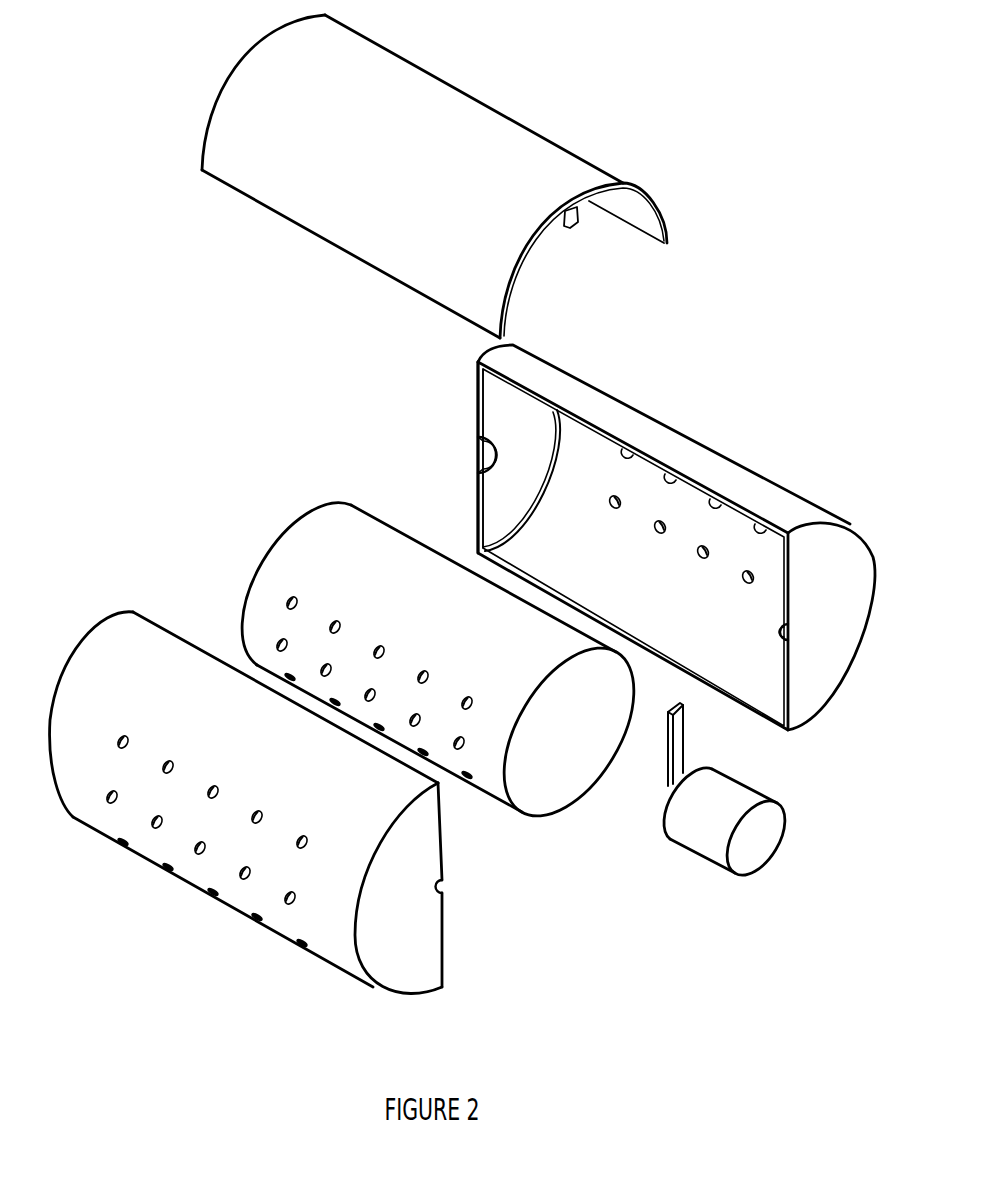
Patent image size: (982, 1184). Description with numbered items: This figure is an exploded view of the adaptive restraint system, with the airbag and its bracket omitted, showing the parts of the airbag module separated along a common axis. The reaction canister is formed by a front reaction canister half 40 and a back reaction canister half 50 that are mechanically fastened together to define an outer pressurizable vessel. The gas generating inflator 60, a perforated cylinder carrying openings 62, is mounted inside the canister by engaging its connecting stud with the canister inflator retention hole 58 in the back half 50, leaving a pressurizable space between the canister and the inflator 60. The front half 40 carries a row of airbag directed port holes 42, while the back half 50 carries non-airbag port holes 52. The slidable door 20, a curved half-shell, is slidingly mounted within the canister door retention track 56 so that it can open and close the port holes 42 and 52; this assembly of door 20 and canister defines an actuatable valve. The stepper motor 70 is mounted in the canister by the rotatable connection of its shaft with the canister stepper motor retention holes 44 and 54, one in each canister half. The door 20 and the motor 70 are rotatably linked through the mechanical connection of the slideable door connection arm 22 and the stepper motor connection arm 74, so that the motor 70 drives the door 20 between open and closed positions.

The slidable door 20 is at (378, 176).
The slideable door connection arm 22 is at (613, 250).
The front reaction canister half 40 is at (301, 833).
The airbag directed port holes 42 is at (198, 840).
The canister stepper motor retention hole 44 is at (494, 912).
The back reaction canister half 50 is at (633, 539).
The non-airbag port holes 52 is at (686, 494).
The canister stepper motor retention hole 54 is at (828, 684).
The canister door retention track 56 is at (435, 444).
The canister inflator retention hole 58 is at (442, 451).
The gas generating inflator 60 is at (417, 631).
The perforations 62 is at (323, 658).
The stepper motor 70 is at (769, 837).
The stepper motor connection arm 74 is at (755, 748).